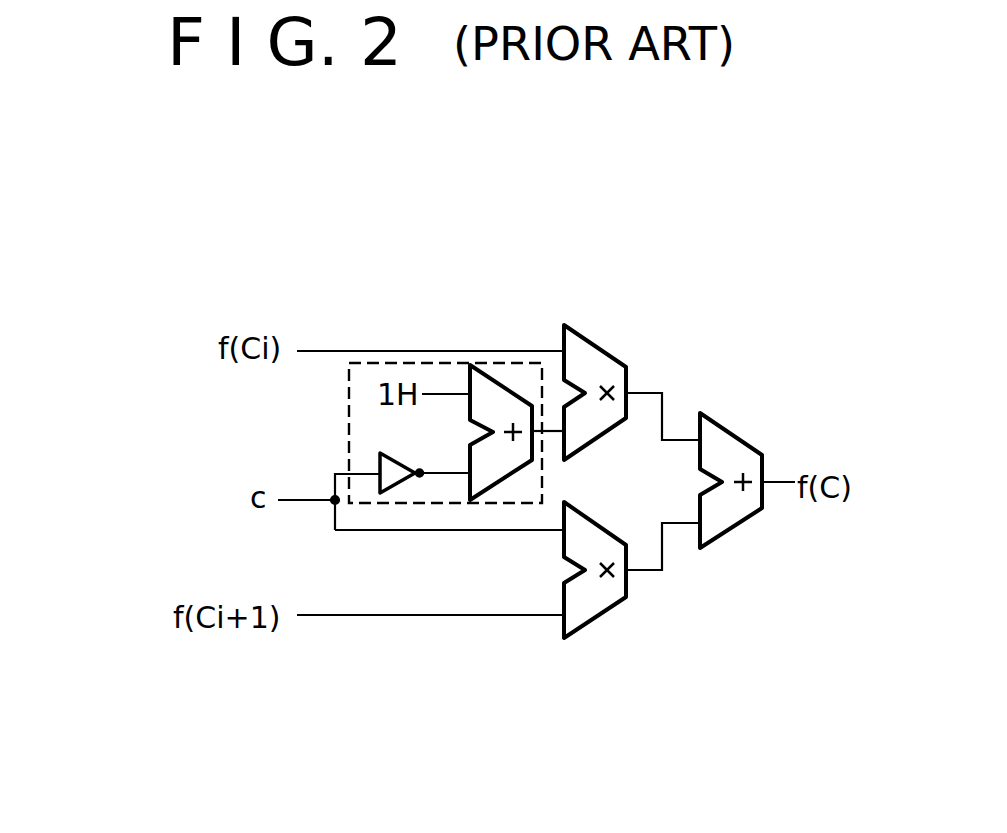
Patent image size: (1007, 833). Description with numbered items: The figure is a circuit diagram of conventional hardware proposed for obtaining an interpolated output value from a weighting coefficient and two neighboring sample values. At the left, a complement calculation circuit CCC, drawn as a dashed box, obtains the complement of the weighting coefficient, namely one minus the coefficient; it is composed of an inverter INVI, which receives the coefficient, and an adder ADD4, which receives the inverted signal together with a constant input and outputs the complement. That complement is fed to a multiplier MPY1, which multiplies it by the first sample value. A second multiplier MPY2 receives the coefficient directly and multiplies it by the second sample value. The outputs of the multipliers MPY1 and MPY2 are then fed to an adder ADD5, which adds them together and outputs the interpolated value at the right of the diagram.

The complement calculation circuit CCC is at (349, 436).
The adder ADD4 is at (521, 378).
The adder ADD5 is at (739, 433).
The multiplier MPY1 is at (600, 345).
The multiplier MPY2 is at (600, 613).
The inverter INVI is at (392, 493).